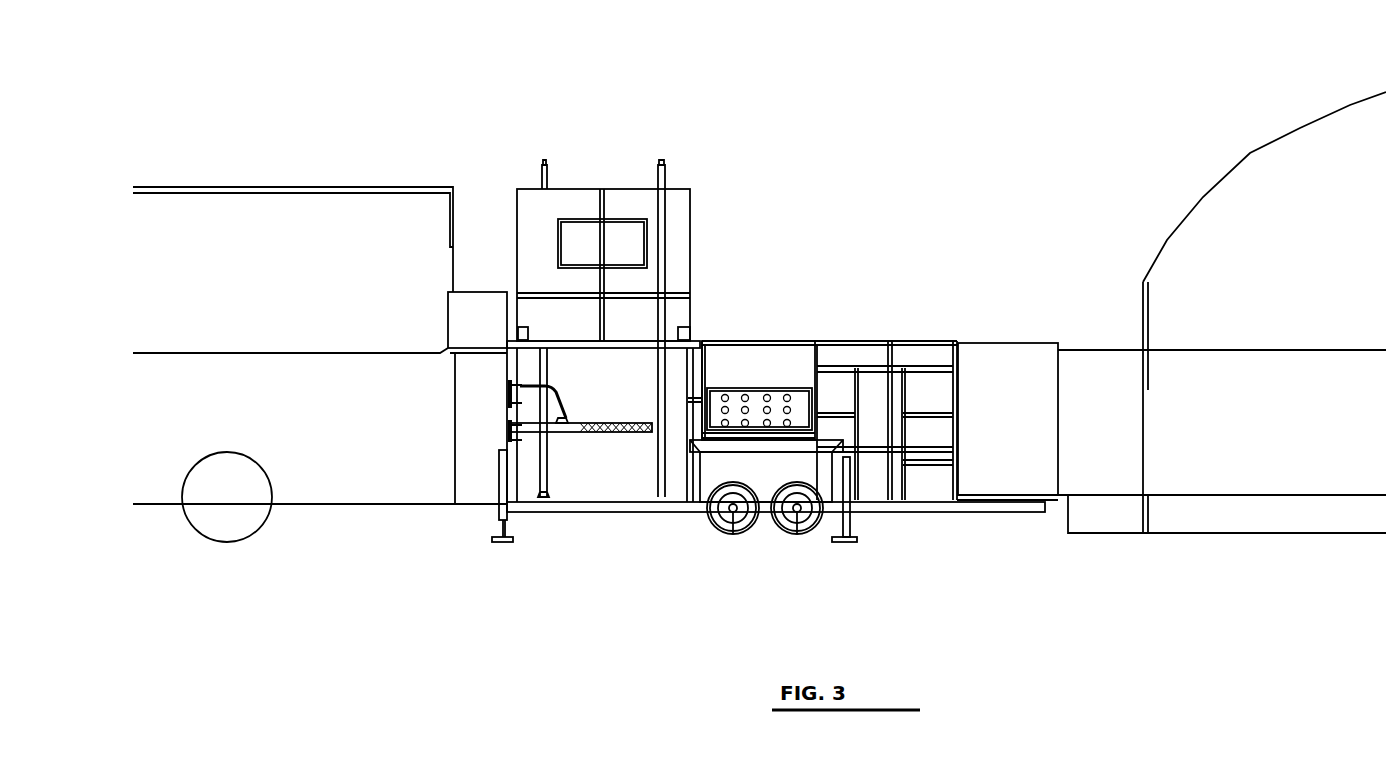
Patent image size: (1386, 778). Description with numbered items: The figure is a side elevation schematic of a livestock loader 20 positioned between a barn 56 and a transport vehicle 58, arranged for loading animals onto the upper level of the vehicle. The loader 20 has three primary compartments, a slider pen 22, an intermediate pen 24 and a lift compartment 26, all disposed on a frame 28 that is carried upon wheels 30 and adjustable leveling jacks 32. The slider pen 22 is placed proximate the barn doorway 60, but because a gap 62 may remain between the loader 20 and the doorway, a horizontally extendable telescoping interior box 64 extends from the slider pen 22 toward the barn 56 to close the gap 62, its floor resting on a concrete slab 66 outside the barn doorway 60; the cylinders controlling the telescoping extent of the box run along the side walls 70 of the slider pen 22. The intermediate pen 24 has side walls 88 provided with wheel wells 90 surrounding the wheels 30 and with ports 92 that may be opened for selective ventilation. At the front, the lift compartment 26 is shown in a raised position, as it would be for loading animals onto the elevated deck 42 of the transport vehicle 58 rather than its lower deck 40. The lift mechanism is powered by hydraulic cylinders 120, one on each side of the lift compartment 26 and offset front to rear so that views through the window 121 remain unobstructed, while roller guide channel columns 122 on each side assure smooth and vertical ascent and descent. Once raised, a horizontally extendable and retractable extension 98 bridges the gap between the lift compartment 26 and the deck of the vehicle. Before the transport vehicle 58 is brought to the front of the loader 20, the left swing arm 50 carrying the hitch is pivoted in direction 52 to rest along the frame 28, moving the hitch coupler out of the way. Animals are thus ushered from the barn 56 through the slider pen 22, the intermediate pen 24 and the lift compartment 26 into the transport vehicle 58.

The livestock loader 20 is at (776, 238).
The slider pen 22 is at (962, 558).
The intermediate pen 24 is at (953, 558).
The lift compartment 26 is at (507, 558).
The frame 28 is at (897, 522).
The wheels 30 is at (727, 534).
The leveling jacks 32 is at (497, 530).
The lower deck 40 is at (288, 503).
The elevated deck 42 is at (288, 353).
The left swing arm 50 is at (562, 418).
The direction 52 is at (510, 428).
The barn 56 is at (1302, 279).
The transport vehicle 58 is at (267, 210).
The barn doorway 60 is at (1145, 430).
The gap 62 is at (1142, 330).
The telescoping interior box 64 is at (1095, 448).
The concrete slab 66 is at (1102, 522).
The side walls 70 is at (988, 345).
The side walls 88 is at (718, 362).
The wheel wells 90 is at (752, 480).
The ports 92 is at (767, 397).
The extension 98 is at (448, 318).
The hydraulic cylinders 120 is at (548, 182).
The window 121 is at (625, 245).
The roller guide channel columns 122 is at (525, 337).